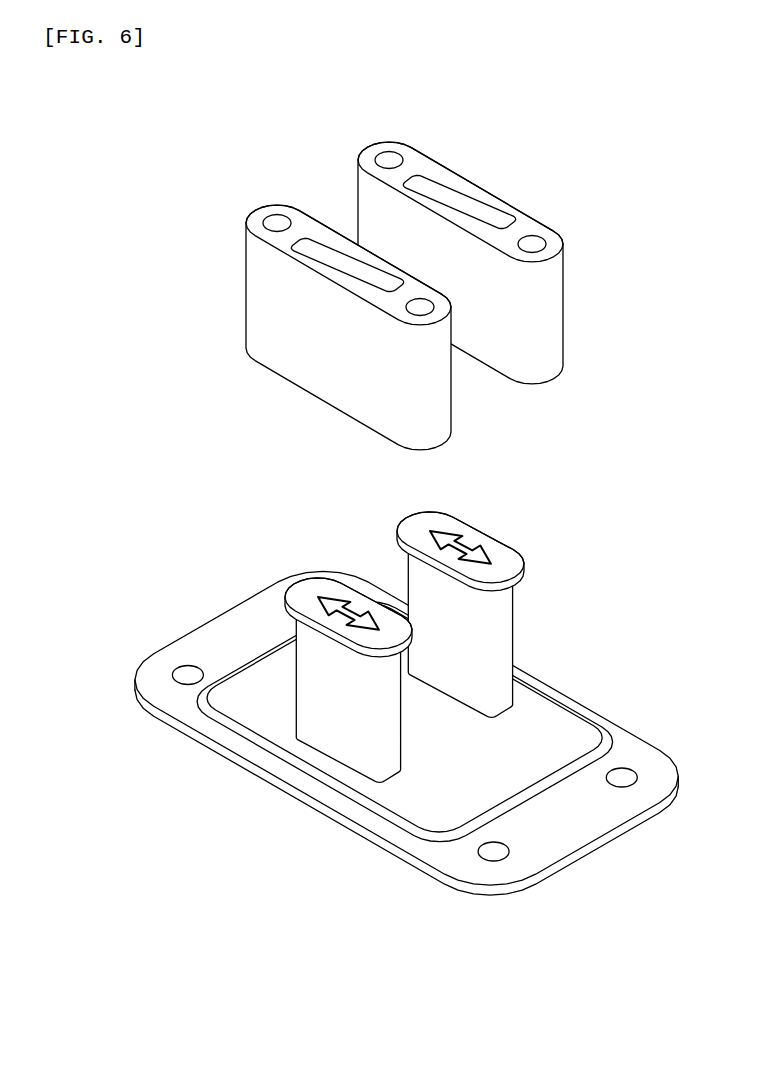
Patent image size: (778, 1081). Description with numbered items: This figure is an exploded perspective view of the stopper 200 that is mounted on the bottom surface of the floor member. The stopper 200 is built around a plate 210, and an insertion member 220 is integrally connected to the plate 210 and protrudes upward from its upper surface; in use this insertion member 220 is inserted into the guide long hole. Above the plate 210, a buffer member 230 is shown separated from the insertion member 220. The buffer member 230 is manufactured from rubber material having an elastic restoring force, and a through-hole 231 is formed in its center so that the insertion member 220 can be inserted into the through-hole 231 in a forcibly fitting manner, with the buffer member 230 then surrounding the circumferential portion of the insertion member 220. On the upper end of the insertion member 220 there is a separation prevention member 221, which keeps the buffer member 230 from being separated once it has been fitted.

The stopper 200 is at (429, 499).
The plate 210 is at (647, 758).
The insertion member 220 is at (500, 645).
The separation prevention member 221 is at (513, 567).
The buffer member 230 is at (555, 313).
The through-hole 231 is at (453, 200).